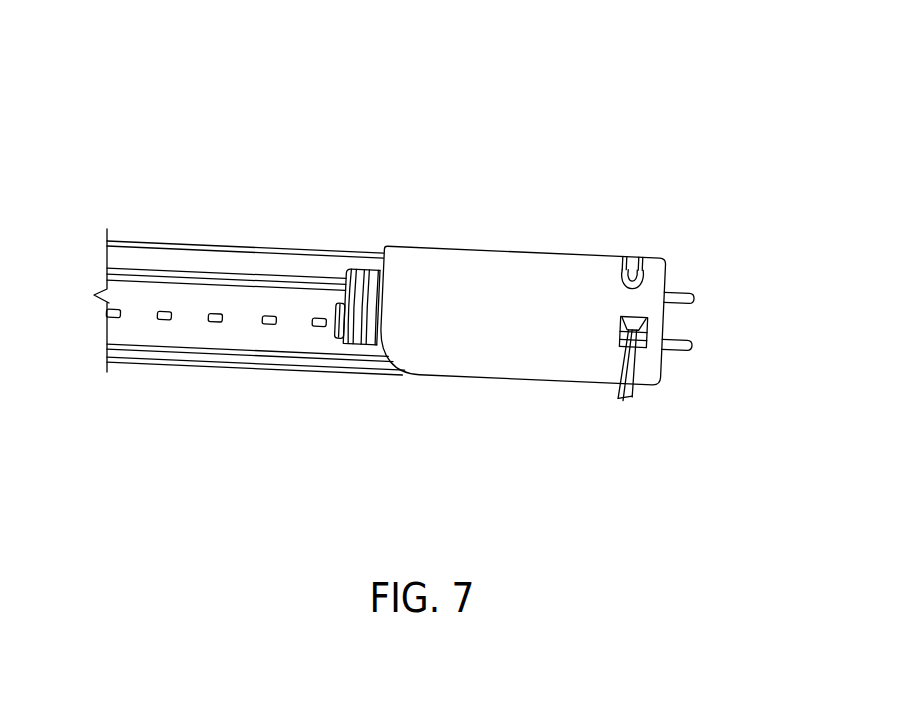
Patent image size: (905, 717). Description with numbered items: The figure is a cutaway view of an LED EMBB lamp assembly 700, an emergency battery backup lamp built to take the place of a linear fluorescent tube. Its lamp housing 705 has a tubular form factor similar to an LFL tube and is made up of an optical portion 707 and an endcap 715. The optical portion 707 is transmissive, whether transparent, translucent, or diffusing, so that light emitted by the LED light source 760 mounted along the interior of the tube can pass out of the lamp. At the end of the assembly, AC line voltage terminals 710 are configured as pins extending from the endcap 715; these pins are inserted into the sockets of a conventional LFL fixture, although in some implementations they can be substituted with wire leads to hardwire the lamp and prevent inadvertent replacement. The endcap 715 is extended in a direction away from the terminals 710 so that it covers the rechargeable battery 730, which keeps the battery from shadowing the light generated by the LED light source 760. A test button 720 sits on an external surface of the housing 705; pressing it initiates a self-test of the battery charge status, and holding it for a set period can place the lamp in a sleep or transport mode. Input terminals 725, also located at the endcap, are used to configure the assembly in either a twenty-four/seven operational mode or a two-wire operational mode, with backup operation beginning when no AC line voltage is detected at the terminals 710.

The LED EMBB lamp assembly 700 is at (145, 73).
The lamp housing 705 is at (660, 425).
The optical portion 707 is at (230, 247).
The AC line voltage terminals 710 is at (698, 345).
The endcap 715 is at (550, 251).
The test button 720 is at (652, 257).
The input terminals 725 is at (647, 364).
The rechargeable battery 730 is at (362, 268).
The LED light source 760 is at (164, 326).